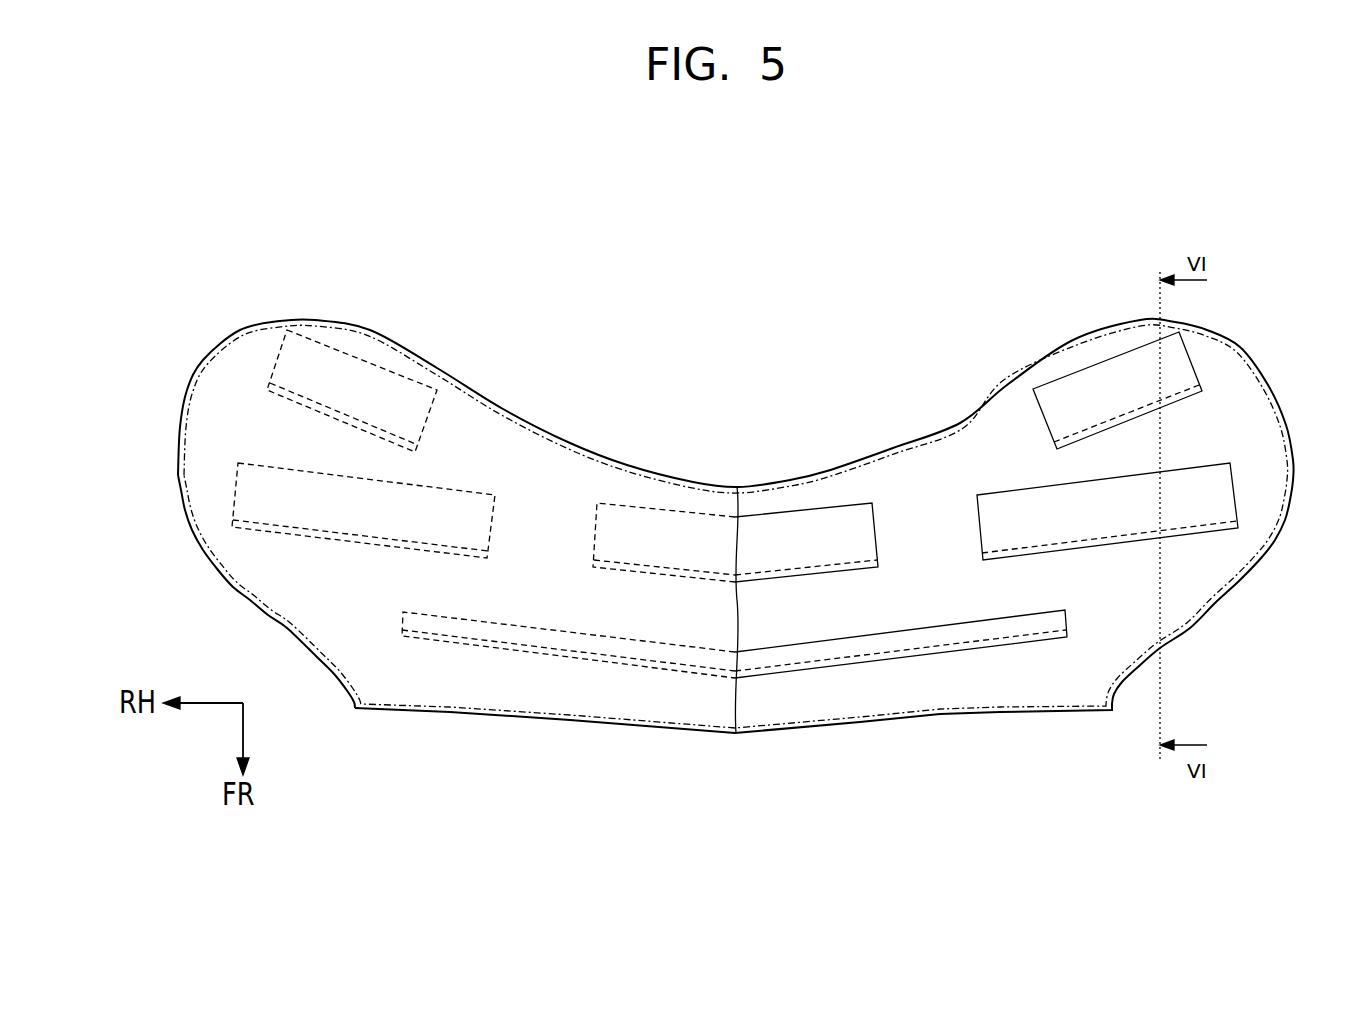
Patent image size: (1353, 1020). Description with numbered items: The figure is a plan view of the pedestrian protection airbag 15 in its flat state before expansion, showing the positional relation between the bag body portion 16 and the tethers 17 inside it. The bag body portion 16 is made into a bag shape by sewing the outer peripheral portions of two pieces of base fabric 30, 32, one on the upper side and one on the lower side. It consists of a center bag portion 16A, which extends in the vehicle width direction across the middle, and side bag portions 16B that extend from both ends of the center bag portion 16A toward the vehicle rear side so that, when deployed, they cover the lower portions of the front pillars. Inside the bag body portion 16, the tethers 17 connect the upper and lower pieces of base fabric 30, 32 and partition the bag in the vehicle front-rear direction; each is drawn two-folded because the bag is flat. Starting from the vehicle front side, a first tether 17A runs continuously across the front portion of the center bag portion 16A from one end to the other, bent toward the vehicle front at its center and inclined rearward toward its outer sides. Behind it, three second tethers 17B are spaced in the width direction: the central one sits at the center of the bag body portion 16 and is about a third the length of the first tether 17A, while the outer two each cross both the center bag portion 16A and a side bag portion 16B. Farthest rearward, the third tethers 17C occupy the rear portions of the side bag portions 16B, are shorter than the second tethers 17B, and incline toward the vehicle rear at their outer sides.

The airbag 15 is at (567, 366).
The bag body portion 16 is at (639, 469).
The center bag portion 16A is at (908, 473).
The side bag portions 16B is at (222, 413).
The tethers 17 is at (704, 528).
The first tether 17A is at (898, 657).
The second tethers 17B is at (237, 493).
The third tethers 17C is at (362, 362).
The base fabric 30 is at (458, 440).
The base fabric 32 is at (997, 443).